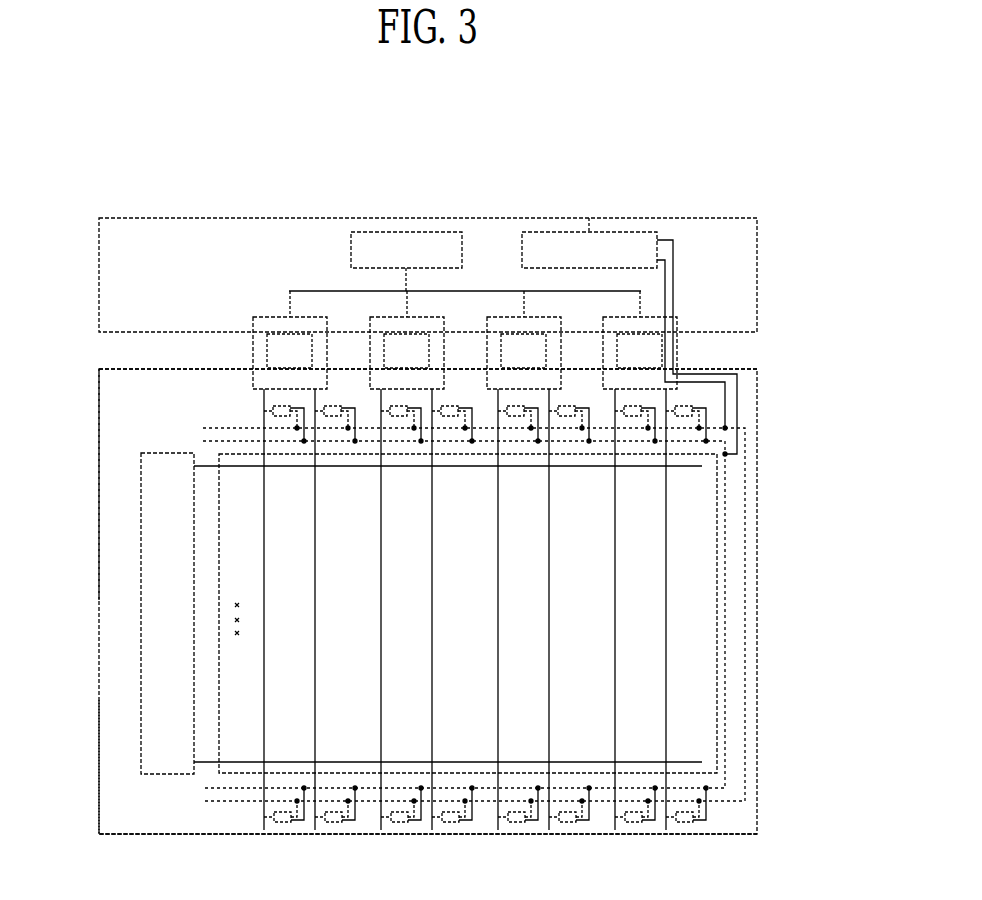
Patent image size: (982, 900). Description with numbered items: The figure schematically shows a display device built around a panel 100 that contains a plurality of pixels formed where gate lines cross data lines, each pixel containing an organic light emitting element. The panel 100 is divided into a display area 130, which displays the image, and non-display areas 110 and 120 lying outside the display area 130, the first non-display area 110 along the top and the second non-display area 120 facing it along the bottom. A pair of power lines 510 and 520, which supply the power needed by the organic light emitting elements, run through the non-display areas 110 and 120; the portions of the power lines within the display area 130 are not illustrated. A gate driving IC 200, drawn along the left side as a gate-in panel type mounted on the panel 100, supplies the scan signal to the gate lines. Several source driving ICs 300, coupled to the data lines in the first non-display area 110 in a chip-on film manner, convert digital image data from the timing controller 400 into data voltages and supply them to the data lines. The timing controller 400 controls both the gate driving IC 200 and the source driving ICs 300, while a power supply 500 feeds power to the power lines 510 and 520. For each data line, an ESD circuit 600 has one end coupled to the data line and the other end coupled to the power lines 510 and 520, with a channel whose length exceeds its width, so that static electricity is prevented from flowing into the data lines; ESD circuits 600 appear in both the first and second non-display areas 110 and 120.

The panel 100 is at (757, 735).
The first non-display area 110 is at (223, 394).
The second non-display area 120 is at (223, 821).
The display area 130 is at (716, 577).
The gate driving IC 200 is at (183, 625).
The source driving IC 300 is at (663, 352).
The timing controller 400 is at (422, 261).
The power supply 500 is at (604, 261).
The power line 510 is at (213, 424).
The power line 520 is at (210, 439).
The ESD circuit 600 is at (685, 402).